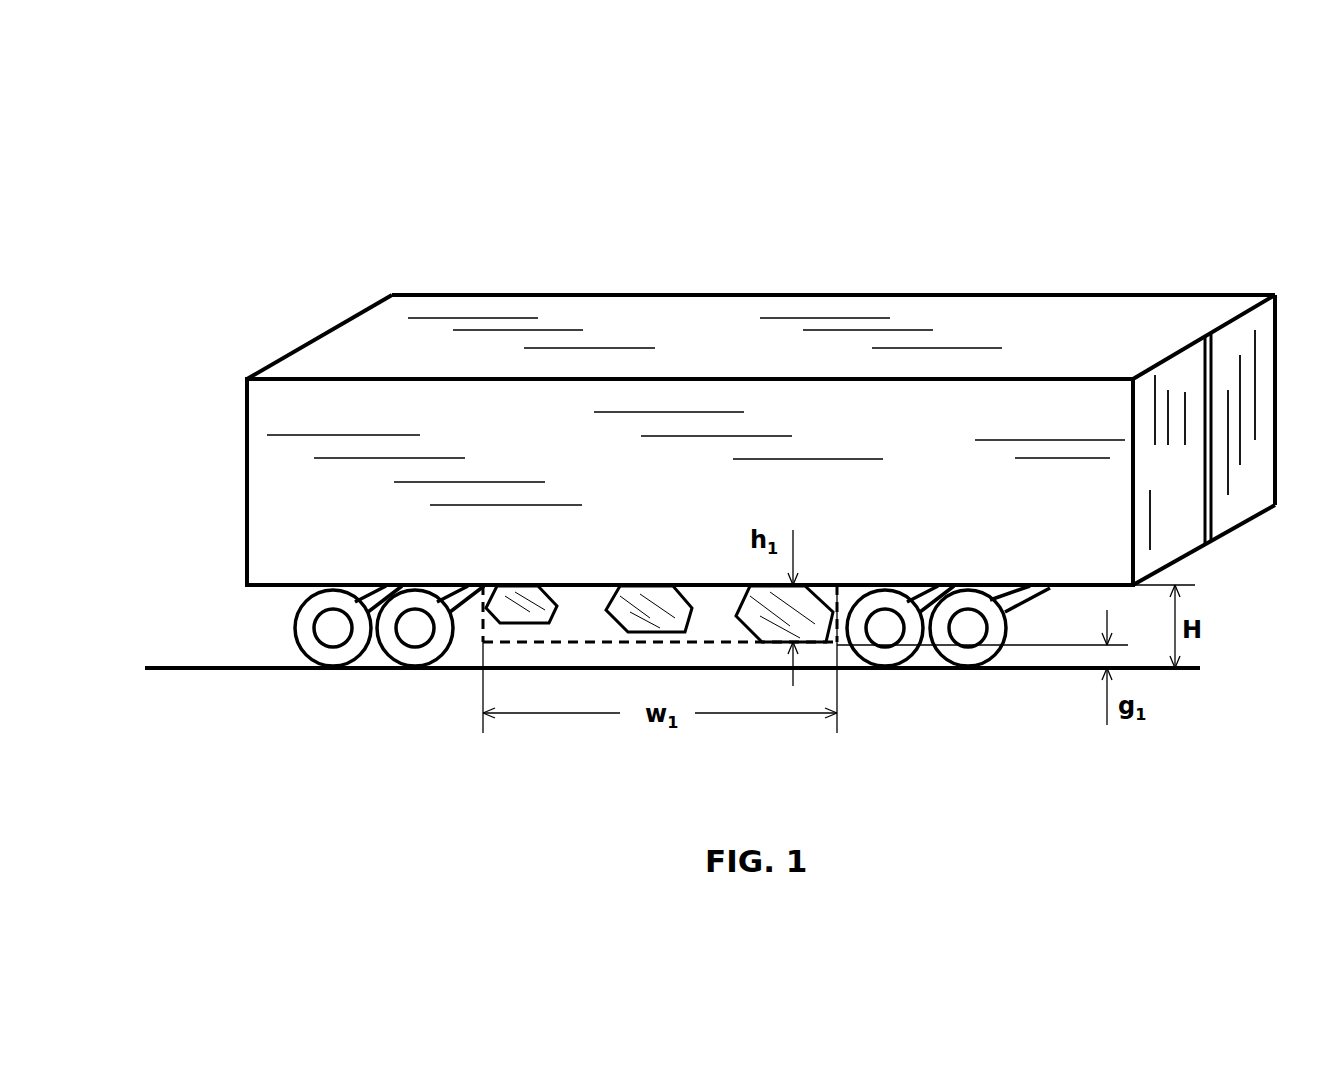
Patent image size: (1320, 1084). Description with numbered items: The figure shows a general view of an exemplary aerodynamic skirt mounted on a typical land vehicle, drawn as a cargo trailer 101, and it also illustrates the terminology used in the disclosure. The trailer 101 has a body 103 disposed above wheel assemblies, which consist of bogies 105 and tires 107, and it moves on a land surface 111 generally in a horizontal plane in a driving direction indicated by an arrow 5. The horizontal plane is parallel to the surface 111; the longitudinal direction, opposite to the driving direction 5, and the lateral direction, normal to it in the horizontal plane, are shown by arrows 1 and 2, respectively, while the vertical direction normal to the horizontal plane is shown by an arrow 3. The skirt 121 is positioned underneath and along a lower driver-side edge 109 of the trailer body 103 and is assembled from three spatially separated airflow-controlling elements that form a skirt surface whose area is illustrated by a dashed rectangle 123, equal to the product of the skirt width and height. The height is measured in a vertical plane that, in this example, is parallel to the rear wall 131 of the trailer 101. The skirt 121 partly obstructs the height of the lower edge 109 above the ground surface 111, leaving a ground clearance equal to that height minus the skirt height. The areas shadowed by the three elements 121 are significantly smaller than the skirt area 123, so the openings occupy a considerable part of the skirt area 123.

The trailer 101 is at (305, 312).
The body 103 is at (1075, 330).
The bogies 105 is at (425, 585).
The tires 107 is at (412, 656).
The lower driver-side edge 109 is at (1090, 585).
The land surface 111 is at (218, 672).
The aerodynamic skirt 121 is at (740, 583).
The skirt area 123 is at (530, 645).
The rear wall 131 is at (1250, 480).
The longitudinal direction arrow 1 is at (421, 266).
The lateral direction arrow 2 is at (421, 266).
The vertical direction arrow 3 is at (421, 266).
The driving direction arrow 5 is at (115, 470).